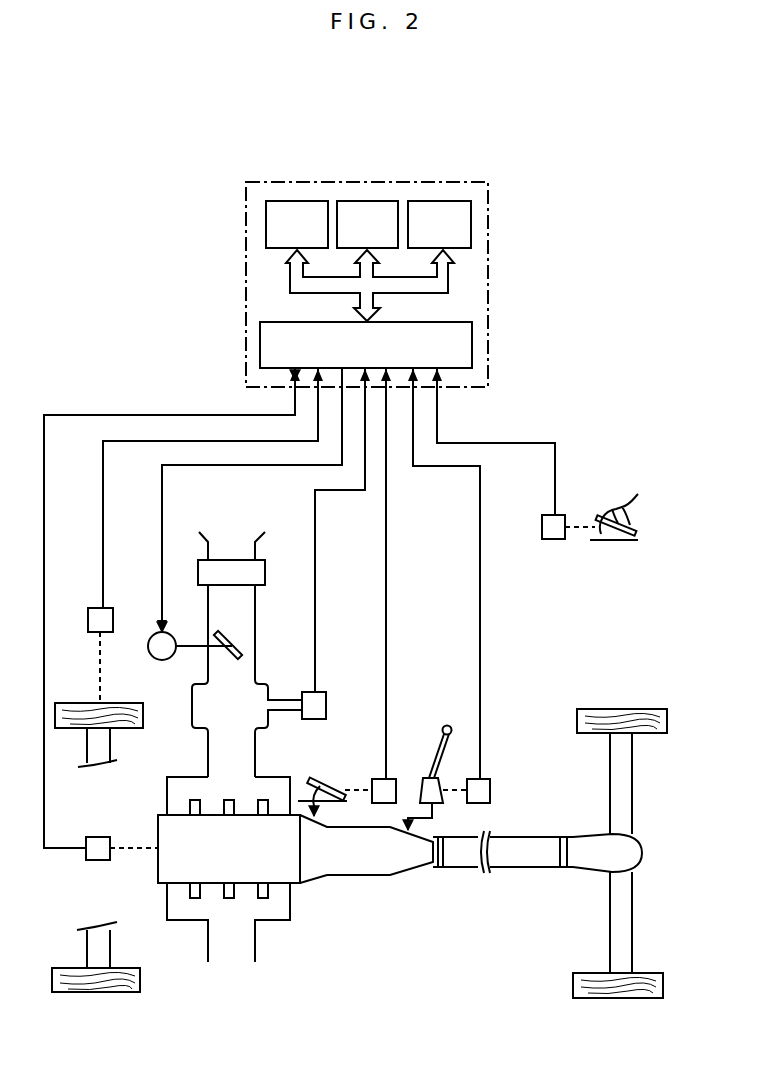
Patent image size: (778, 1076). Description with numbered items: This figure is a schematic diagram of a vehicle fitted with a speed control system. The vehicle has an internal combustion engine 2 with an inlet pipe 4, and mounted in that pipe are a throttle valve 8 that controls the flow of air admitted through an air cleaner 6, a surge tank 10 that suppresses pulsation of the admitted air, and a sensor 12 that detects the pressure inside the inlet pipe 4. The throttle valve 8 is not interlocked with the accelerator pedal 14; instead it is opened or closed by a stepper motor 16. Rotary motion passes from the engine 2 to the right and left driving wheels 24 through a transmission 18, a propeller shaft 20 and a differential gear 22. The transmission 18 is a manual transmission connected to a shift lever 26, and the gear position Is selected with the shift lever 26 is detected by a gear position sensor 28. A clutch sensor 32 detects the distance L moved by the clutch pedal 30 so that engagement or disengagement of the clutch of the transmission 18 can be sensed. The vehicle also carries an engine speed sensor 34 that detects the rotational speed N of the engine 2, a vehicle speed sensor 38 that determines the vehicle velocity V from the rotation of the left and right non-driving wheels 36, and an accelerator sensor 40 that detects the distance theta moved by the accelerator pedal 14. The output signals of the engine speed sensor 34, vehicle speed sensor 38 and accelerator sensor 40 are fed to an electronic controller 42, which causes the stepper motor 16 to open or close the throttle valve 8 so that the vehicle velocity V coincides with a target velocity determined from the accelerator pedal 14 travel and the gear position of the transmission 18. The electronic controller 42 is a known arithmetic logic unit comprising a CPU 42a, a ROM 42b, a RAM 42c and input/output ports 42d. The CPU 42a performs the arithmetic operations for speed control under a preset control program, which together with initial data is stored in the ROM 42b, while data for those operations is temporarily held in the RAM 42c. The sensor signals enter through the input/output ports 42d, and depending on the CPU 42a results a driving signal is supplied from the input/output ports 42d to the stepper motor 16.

The internal combustion engine 2 is at (150, 880).
The inlet pipe 4 is at (256, 755).
The air cleaner 6 is at (265, 573).
The throttle valve 8 is at (240, 647).
The surge tank 10 is at (263, 681).
The sensor 12 is at (326, 705).
The accelerator pedal 14 is at (615, 537).
The stepper motor 16 is at (161, 661).
The transmission 18 is at (362, 866).
The propeller shaft 20 is at (518, 861).
The differential gear 22 is at (637, 852).
The driving wheels 24 is at (668, 722).
The shift lever 26 is at (435, 752).
The gear position sensor 28 is at (490, 790).
The clutch pedal 30 is at (325, 780).
The clutch sensor 32 is at (371, 777).
The engine speed sensor 34 is at (88, 862).
The non-driving wheels 36 is at (143, 728).
The vehicle speed sensor 38 is at (88, 628).
The accelerator sensor 40 is at (548, 540).
The electronic controller 42 is at (490, 278).
The CPU 42a is at (300, 200).
The ROM 42b is at (373, 200).
The RAM 42c is at (445, 200).
The input/output ports 42d is at (473, 347).